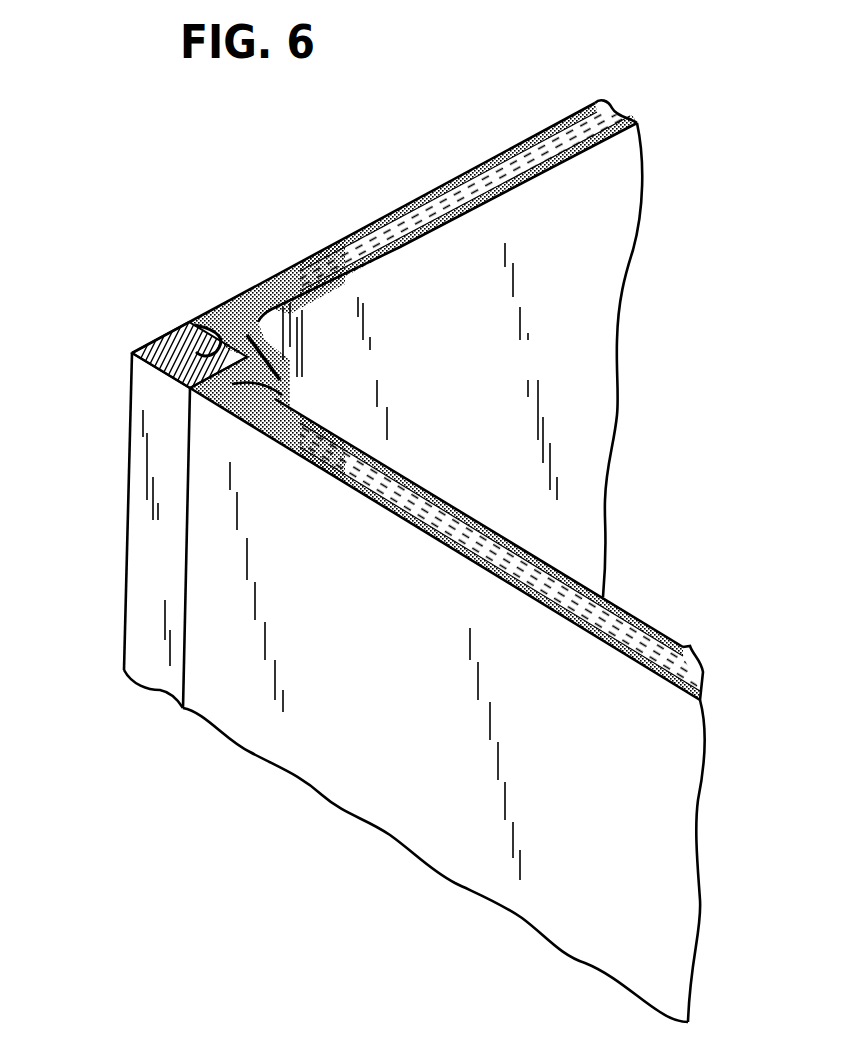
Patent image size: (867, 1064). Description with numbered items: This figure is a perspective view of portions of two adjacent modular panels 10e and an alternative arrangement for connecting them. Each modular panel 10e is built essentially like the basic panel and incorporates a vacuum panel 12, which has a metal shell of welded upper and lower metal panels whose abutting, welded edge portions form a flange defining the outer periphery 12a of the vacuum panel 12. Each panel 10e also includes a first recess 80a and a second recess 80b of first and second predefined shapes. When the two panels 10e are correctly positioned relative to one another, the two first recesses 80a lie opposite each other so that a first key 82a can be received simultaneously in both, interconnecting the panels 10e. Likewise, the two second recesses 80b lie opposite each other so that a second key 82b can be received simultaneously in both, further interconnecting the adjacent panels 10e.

The modular panel 10e is at (612, 260).
The vacuum panel 12 is at (402, 207).
The outer periphery 12a is at (252, 312).
The first recess 80a is at (210, 342).
The second recess 80b is at (222, 310).
The first key 82a is at (142, 378).
The second key 82b is at (185, 358).